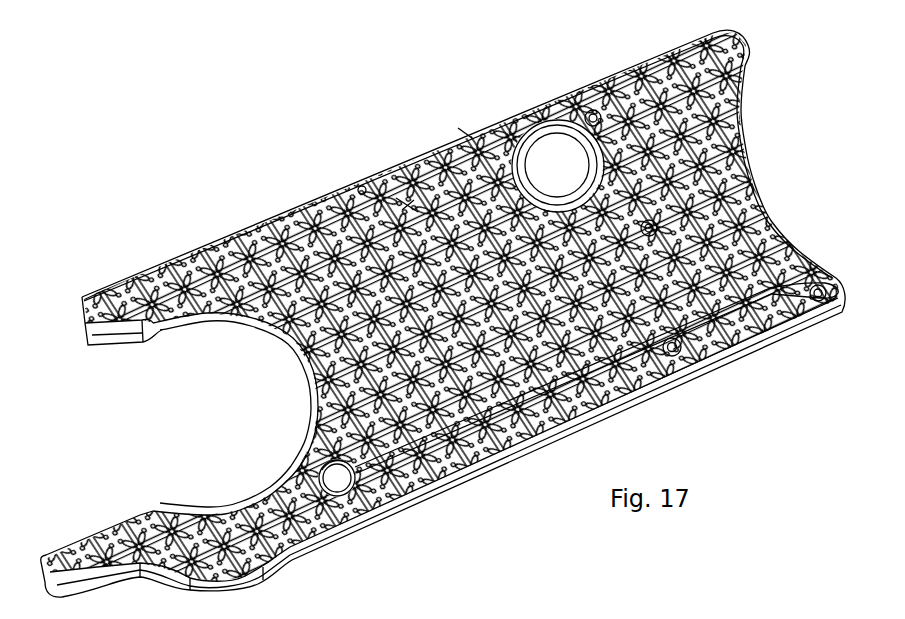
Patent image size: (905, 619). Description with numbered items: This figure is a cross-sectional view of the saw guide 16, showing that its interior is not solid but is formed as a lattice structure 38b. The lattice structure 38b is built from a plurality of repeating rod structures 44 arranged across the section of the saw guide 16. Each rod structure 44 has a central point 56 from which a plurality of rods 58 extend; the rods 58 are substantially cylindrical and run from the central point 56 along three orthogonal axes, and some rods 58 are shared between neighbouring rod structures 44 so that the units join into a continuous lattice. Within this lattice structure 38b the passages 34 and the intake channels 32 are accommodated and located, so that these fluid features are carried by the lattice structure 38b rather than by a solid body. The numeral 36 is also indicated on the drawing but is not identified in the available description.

The saw guide 16 is at (257, 177).
The intake channel 32 is at (310, 450).
The passage 34 is at (488, 452).
The boss 36 is at (672, 378).
The lattice structure 38b is at (395, 208).
The rod structure 44 is at (600, 80).
The central point 56 is at (478, 175).
The rod 58 is at (407, 205).